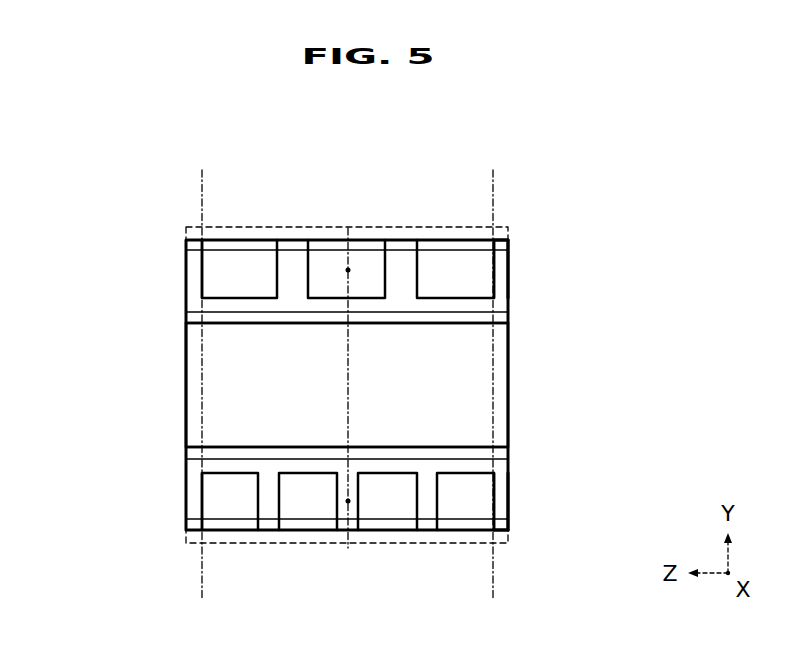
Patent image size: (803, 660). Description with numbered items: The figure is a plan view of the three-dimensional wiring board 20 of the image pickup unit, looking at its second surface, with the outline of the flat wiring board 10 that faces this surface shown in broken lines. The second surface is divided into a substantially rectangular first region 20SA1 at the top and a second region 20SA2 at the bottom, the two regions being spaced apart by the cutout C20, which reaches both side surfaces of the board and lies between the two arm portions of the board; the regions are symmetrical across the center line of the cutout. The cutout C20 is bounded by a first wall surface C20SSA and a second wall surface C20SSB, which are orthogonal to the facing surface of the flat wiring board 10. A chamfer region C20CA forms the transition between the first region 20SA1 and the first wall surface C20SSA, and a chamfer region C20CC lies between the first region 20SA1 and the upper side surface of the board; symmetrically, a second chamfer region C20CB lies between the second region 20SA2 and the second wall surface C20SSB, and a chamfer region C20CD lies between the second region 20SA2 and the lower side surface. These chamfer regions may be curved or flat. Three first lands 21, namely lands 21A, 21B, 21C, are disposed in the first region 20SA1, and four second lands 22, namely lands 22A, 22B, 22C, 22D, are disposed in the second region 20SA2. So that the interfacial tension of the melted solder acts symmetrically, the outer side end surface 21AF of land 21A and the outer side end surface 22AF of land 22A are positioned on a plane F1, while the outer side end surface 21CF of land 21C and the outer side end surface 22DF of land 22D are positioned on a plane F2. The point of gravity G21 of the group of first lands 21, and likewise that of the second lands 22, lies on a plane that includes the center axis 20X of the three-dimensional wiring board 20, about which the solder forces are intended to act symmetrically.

The flat wiring board 10 is at (195, 215).
The three-dimensional wiring board 20 is at (641, 189).
The first lands 21 is at (348, 219).
The first land 21A is at (455, 239).
The first land 21B is at (336, 238).
The first land 21C is at (243, 238).
The second lands 22 is at (348, 552).
The second land 22A is at (457, 533).
The second land 22B is at (382, 531).
The second land 22C is at (307, 531).
The second land 22D is at (248, 531).
The point of gravity G21 is at (348, 270).
The outer side end surface 21CF is at (202, 277).
The outer side end surface 21AF is at (494, 285).
The outer side end surface 22DF is at (202, 497).
The outer side end surface 22AF is at (494, 506).
The cutout C20 is at (488, 388).
The chamfer region C20CA is at (183, 318).
The second chamfer region C20CB is at (183, 453).
The chamfer region C20CC is at (502, 236).
The chamfer region C20CD is at (483, 535).
The first wall surface C20SSA is at (240, 330).
The second wall surface C20SSB is at (240, 442).
The center axis 20X is at (350, 389).
The first region 20SA1 is at (506, 265).
The second region 20SA2 is at (506, 485).
The plane F1 is at (497, 400).
The plane F2 is at (203, 400).